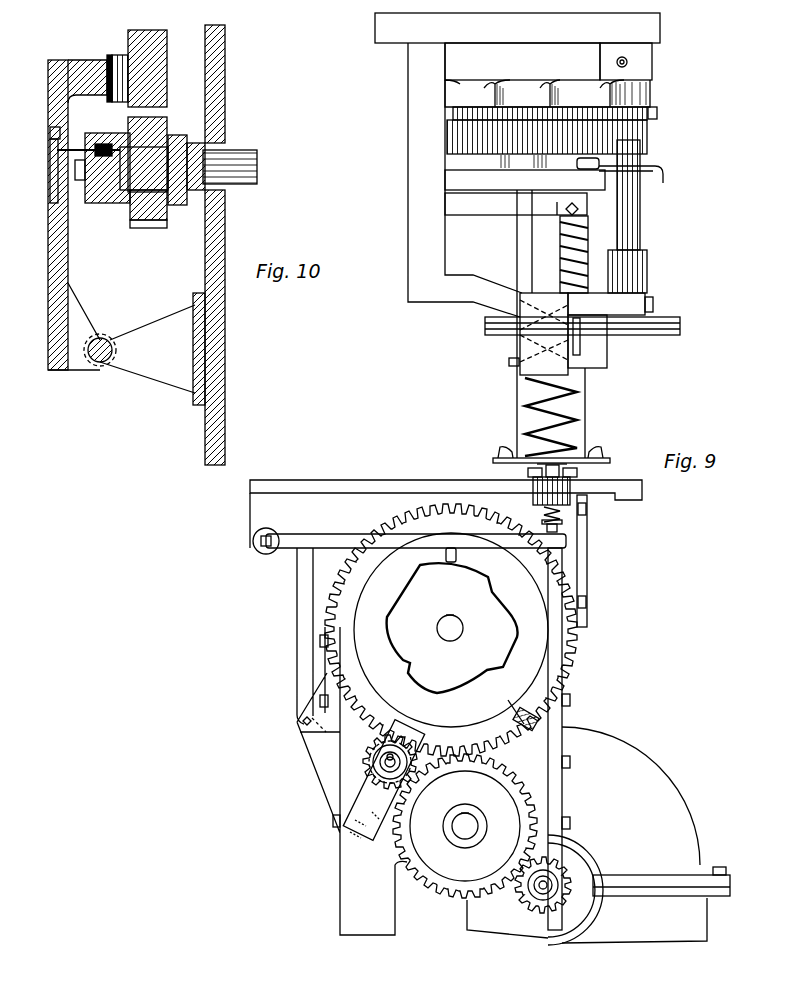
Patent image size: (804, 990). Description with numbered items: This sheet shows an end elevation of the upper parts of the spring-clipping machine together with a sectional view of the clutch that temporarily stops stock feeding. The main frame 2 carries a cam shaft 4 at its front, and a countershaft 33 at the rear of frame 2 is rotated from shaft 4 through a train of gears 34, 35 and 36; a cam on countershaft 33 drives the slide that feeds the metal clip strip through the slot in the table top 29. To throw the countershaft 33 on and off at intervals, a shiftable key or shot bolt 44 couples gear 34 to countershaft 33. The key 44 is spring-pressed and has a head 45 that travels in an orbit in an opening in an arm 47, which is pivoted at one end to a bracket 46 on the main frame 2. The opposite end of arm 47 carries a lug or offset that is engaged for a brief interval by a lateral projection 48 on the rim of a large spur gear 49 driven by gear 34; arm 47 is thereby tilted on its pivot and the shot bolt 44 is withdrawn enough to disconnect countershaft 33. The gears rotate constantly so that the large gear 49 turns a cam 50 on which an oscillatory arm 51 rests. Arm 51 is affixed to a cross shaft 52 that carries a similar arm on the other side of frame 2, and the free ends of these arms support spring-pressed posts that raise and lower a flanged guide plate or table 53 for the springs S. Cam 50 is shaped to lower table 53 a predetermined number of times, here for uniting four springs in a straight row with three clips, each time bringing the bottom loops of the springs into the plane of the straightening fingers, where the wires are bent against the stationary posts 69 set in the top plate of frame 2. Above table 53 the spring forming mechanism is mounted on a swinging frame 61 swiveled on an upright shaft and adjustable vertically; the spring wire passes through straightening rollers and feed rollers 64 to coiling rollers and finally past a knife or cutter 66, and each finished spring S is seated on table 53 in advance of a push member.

In FIG. 10, the main frame 2 is at (225, 404).
In FIG. 9, the main frame 2 is at (340, 890).
In FIG. 9, the cam shaft 4 is at (552, 882).
In FIG. 9, the table top 29 is at (362, 480).
In FIG. 10, the countershaft 33 is at (257, 168).
In FIG. 10, the gear 34 is at (146, 228).
In FIG. 9, the gear 34 is at (383, 757).
In FIG. 9, the gear 35 is at (465, 826).
In FIG. 9, the gear 36 is at (528, 905).
In FIG. 10, the shiftable key or shot bolt 44 is at (57, 153).
In FIG. 9, the shiftable key or shot bolt 44 is at (363, 758).
In FIG. 10, the head 45 is at (50, 134).
In FIG. 10, the bracket 46 is at (58, 185).
In FIG. 10, the arm 47 is at (50, 233).
In FIG. 9, the arm 47 is at (360, 799).
In FIG. 10, the lateral projection 48 is at (118, 55).
In FIG. 9, the lateral projection 48 is at (507, 718).
In FIG. 10, the large spur gear 49 is at (167, 68).
In FIG. 9, the large spur gear 49 is at (568, 660).
In FIG. 9, the cam 50 is at (498, 606).
In FIG. 9, the oscillatory arm 51 is at (452, 548).
In FIG. 9, the cross shaft 52 is at (253, 541).
In FIG. 9, the flanged guide plate or table 53 is at (493, 460).
In FIG. 9, the swinging frame 61 is at (428, 304).
In FIG. 9, the feed rollers 64 is at (680, 327).
In FIG. 9, the knife or cutter 66 is at (566, 300).
In FIG. 9, the stationary posts or lugs 69 is at (578, 473).
In FIG. 9, the springs S is at (586, 414).